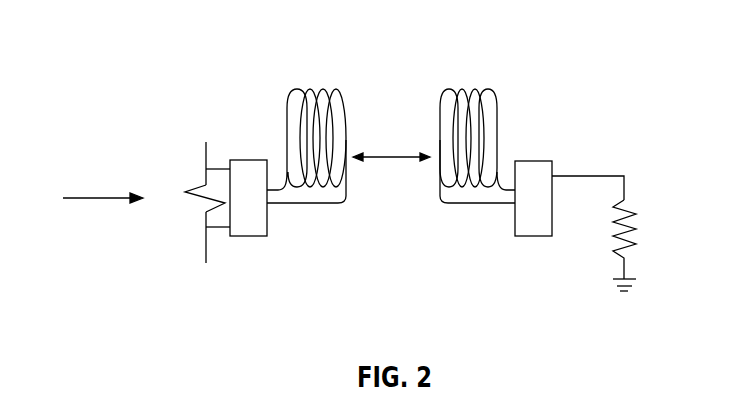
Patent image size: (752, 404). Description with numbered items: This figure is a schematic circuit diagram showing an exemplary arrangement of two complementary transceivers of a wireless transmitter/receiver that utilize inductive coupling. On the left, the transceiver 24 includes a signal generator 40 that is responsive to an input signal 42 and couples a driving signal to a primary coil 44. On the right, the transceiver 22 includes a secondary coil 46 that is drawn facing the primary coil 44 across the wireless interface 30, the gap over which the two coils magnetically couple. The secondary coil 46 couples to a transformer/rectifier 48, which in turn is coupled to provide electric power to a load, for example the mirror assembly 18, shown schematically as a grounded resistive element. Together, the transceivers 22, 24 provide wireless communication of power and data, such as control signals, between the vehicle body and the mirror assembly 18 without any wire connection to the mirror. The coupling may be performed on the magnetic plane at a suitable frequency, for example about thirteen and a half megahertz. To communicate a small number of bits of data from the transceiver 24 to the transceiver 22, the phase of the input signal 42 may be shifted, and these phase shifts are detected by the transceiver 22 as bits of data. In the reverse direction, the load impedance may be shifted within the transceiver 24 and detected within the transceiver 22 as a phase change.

The mirror assembly 18 is at (633, 208).
The transceiver 22 is at (502, 182).
The transceiver 24 is at (265, 182).
The wireless interface 30 is at (392, 155).
The signal generator 40 is at (247, 236).
The input signal 42 is at (53, 209).
The primary coil 44 is at (307, 87).
The secondary coil 46 is at (475, 88).
The transformer/rectifier 48 is at (535, 160).